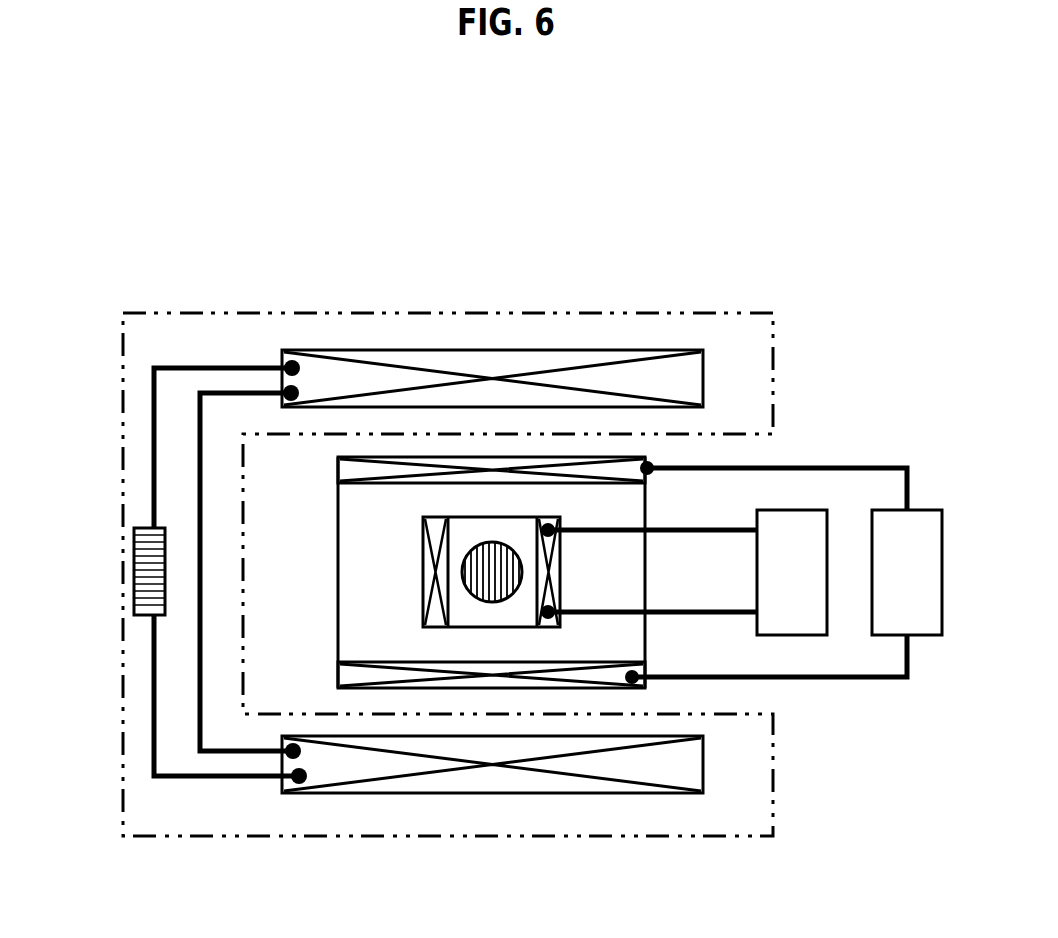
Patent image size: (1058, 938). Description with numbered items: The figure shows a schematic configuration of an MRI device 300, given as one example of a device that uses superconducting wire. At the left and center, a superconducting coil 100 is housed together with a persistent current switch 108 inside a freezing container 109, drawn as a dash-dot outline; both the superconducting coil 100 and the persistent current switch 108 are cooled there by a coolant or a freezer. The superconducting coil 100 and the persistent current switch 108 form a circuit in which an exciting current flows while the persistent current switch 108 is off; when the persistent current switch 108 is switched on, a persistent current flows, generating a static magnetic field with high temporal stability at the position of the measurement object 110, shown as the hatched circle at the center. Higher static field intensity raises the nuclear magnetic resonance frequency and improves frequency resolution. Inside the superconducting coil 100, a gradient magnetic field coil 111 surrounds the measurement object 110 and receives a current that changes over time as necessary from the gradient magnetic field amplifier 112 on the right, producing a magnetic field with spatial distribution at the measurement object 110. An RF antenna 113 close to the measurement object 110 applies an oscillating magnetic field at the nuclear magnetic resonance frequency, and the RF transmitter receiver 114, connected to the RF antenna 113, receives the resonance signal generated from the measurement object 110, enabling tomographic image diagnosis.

The MRI device 300 is at (212, 269).
The superconducting coil 100 is at (405, 383).
The persistent current switch 108 is at (143, 556).
The freezing container 109 is at (772, 348).
The measurement object 110 is at (500, 560).
The gradient magnetic field coil 111 is at (620, 470).
The gradient magnetic field amplifier 112 is at (927, 620).
The RF antenna 113 is at (437, 620).
The RF transmitter receiver 114 is at (807, 620).